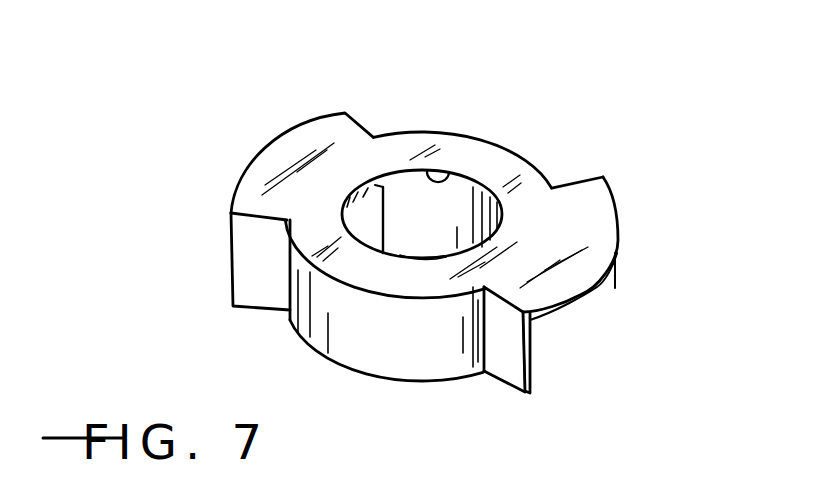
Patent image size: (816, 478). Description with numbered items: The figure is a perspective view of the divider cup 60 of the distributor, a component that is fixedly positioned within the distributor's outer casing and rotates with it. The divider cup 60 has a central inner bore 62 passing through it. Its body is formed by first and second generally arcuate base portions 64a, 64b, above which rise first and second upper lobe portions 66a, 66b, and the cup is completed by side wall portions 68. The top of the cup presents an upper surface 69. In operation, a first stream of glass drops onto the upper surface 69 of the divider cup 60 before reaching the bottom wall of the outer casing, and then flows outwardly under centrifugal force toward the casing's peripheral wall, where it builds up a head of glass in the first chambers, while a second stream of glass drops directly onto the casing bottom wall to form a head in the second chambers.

The divider cup 60 is at (512, 128).
The inner bore 62 is at (446, 178).
The first generally arcuate base portion 64a is at (403, 357).
The second generally arcuate base portion 64b is at (510, 170).
The first upper lobe portion 66a is at (602, 208).
The second upper lobe portion 66b is at (271, 163).
The side wall portions 68 is at (368, 210).
The upper surface 69 is at (550, 185).